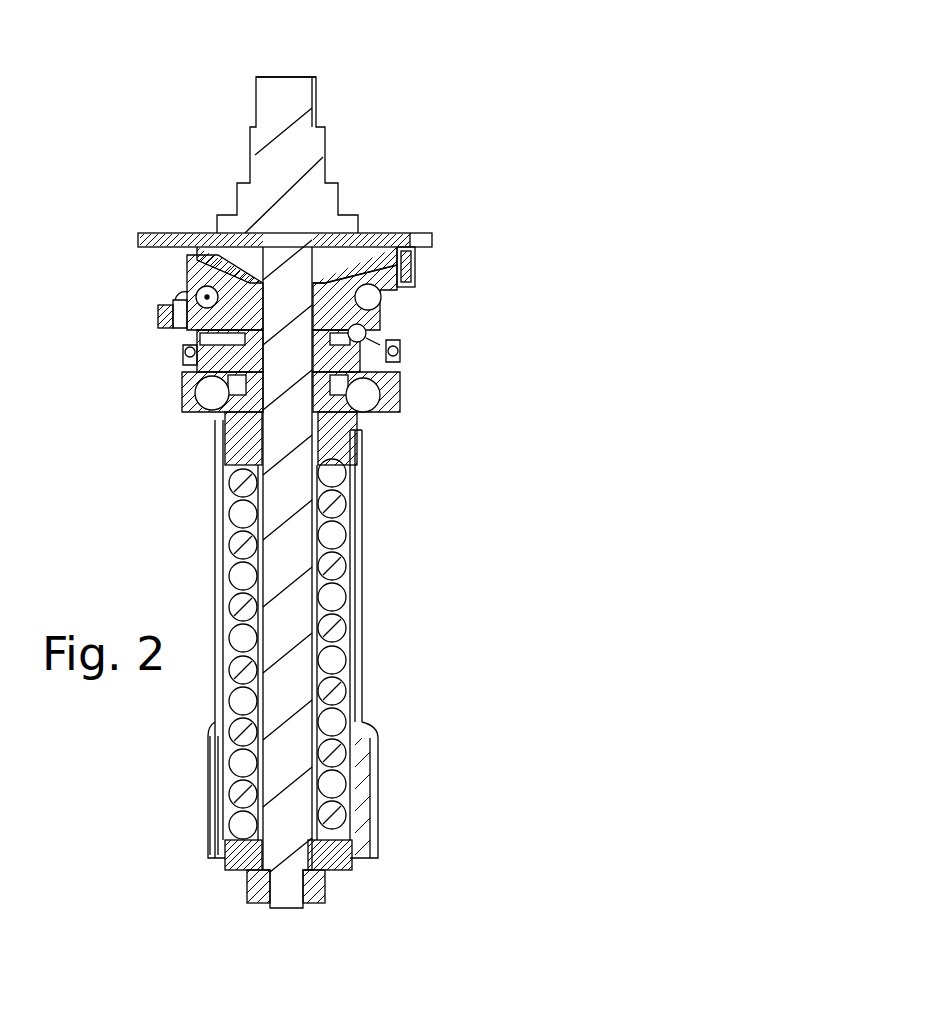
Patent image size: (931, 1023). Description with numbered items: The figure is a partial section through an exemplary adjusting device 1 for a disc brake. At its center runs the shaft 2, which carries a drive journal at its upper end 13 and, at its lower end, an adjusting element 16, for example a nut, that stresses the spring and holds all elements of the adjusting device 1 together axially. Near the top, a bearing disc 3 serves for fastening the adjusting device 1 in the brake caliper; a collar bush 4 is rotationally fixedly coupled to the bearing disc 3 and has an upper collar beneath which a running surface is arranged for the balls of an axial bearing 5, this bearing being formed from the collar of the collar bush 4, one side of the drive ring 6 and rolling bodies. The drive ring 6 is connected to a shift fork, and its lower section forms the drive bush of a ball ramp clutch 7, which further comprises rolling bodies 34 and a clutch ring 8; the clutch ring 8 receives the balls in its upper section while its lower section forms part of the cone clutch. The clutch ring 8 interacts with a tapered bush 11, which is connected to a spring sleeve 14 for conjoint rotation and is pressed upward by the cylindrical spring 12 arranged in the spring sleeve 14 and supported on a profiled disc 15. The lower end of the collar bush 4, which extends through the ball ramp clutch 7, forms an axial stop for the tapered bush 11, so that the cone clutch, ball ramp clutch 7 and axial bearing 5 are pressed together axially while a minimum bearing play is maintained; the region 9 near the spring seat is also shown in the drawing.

The adjusting device 1 is at (292, 506).
The shaft 2 is at (332, 142).
The bearing disc 3 is at (418, 230).
The collar bush 4 is at (422, 255).
The axial bearing 5 is at (395, 293).
The drive ring 6 is at (158, 305).
The ball ramp clutch 7 is at (415, 340).
The clutch ring 8 is at (402, 390).
The spring seat 9 is at (212, 420).
The tapered bush 11 is at (365, 427).
The cylindrical spring 12 is at (343, 628).
The spindle end 13 is at (318, 73).
The spring sleeve 14 is at (383, 818).
The profiled disc 15 is at (355, 873).
The adjusting element 16 is at (243, 900).
The rolling bodies 34 is at (378, 342).